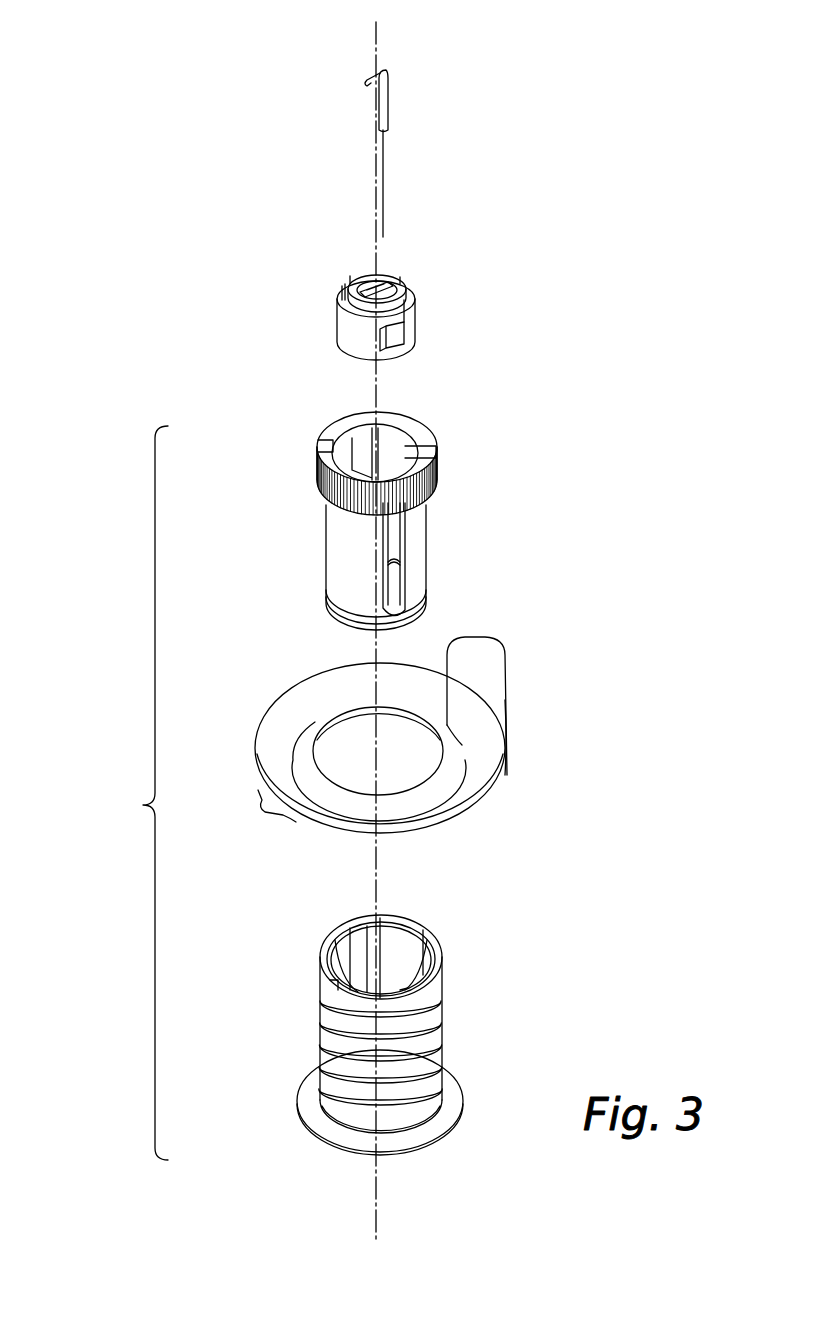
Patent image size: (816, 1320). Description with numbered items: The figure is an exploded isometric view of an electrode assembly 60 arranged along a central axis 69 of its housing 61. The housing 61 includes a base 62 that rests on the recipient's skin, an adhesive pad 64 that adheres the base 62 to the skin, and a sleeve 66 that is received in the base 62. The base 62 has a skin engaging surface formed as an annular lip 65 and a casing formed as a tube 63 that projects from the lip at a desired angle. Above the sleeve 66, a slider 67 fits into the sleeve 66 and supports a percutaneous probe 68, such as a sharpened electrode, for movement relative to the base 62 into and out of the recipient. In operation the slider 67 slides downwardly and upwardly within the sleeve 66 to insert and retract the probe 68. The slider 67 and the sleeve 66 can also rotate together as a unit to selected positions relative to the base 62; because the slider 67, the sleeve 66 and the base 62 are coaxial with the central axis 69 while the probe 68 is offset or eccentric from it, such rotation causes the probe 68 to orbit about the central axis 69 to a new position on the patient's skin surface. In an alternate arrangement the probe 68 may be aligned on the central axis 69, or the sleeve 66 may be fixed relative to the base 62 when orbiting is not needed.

The electrode assembly 60 is at (155, 190).
The housing 61 is at (143, 805).
The base 62 is at (313, 1035).
The tube 63 is at (440, 1062).
The adhesive pad 64 is at (280, 702).
The annular lip 65 is at (447, 1130).
The sleeve 66 is at (326, 560).
The slider 67 is at (338, 330).
The percutaneous probe 68 is at (388, 116).
The central axis 69 is at (376, 40).